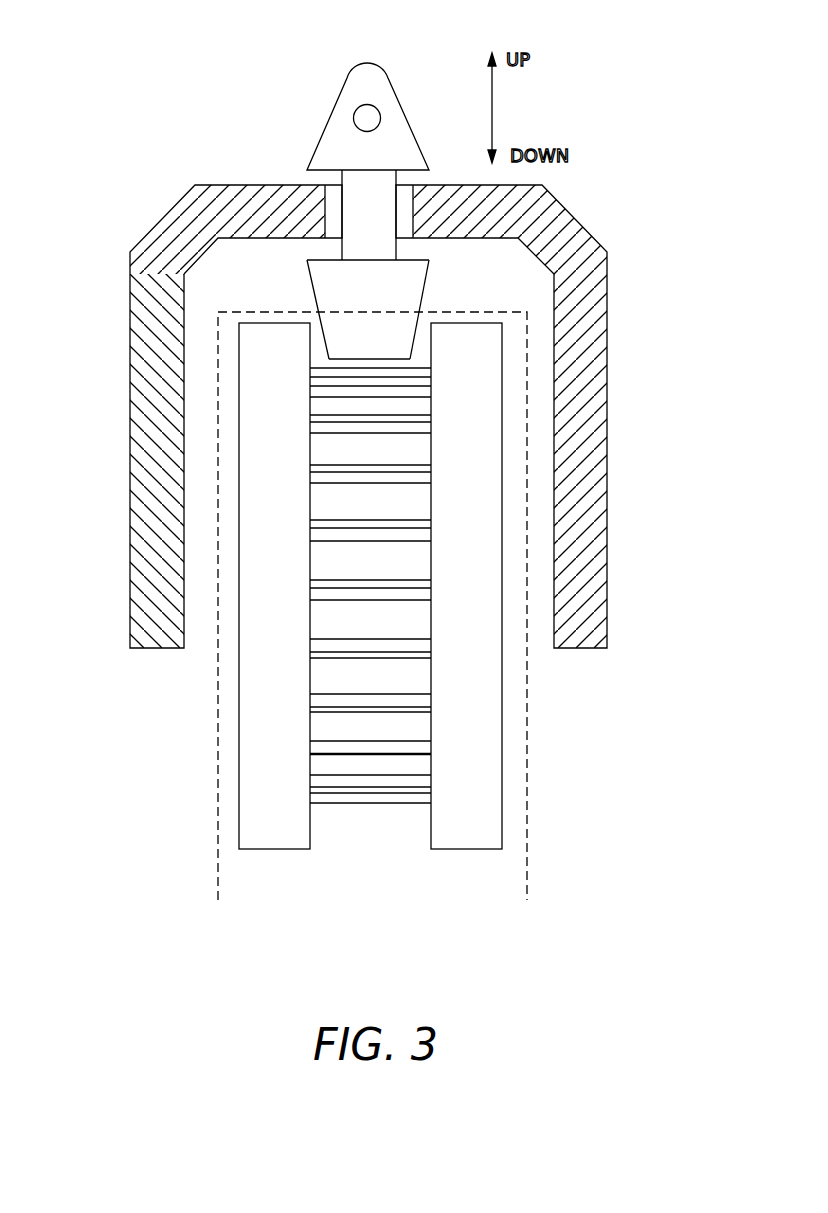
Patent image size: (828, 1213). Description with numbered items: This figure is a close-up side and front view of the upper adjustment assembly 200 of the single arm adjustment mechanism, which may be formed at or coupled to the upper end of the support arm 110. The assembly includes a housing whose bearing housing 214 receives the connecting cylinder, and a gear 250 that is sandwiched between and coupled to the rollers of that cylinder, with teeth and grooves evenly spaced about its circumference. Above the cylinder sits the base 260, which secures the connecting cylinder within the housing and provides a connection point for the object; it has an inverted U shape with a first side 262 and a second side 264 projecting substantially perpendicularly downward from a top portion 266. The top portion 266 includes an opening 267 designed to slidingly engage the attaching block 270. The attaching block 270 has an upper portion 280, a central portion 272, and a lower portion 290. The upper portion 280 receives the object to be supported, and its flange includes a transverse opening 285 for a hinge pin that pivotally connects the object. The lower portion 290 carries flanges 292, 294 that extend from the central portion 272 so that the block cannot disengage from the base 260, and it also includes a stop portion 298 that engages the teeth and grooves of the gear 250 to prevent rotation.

The support arm 110 is at (532, 879).
The upper adjustment assembly 200 is at (370, 607).
The second bearing housing 214 is at (275, 842).
The gear 250 is at (420, 561).
The base 260 is at (370, 395).
The first side 262 is at (130, 449).
The second side 264 is at (607, 446).
The top portion 266 is at (227, 195).
The opening 267 is at (405, 185).
The attaching block 270 is at (373, 301).
The central portion 272 is at (342, 252).
The upper portion 280 is at (344, 143).
The opening 285 is at (367, 118).
The lower portion 290 is at (371, 307).
The flange 292 is at (322, 290).
The flange 294 is at (427, 283).
The stop portion 298 is at (369, 337).